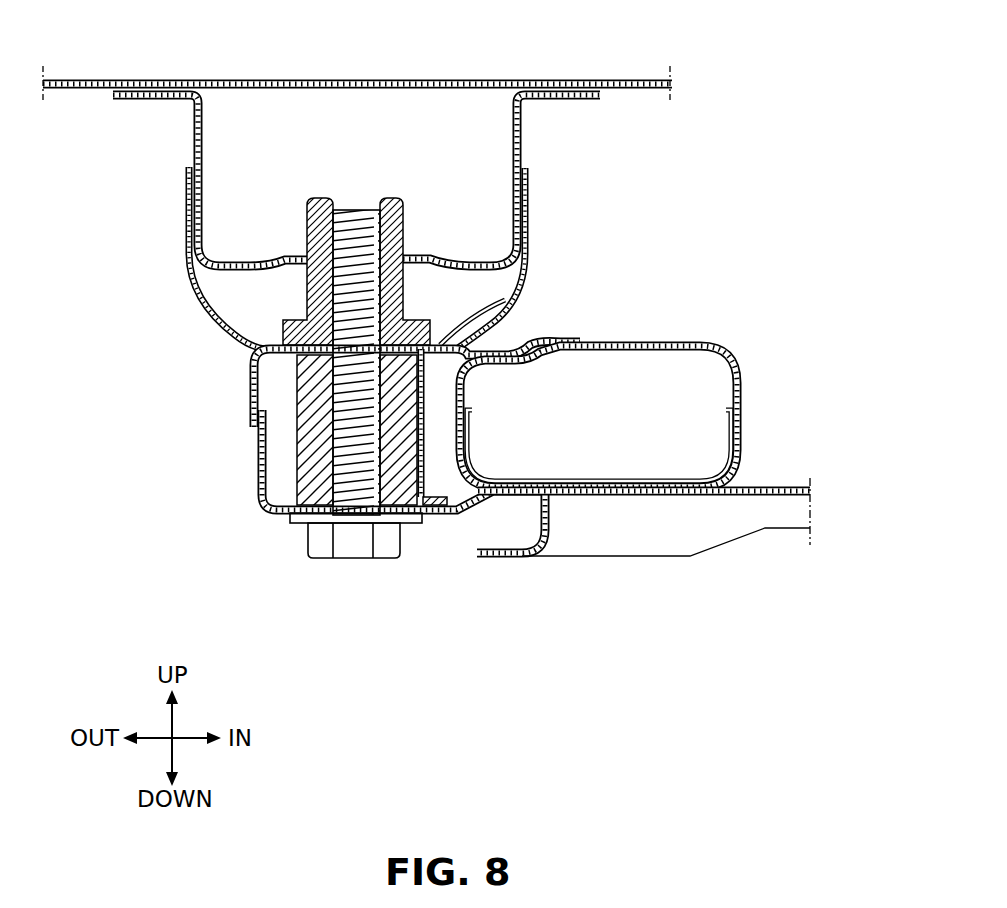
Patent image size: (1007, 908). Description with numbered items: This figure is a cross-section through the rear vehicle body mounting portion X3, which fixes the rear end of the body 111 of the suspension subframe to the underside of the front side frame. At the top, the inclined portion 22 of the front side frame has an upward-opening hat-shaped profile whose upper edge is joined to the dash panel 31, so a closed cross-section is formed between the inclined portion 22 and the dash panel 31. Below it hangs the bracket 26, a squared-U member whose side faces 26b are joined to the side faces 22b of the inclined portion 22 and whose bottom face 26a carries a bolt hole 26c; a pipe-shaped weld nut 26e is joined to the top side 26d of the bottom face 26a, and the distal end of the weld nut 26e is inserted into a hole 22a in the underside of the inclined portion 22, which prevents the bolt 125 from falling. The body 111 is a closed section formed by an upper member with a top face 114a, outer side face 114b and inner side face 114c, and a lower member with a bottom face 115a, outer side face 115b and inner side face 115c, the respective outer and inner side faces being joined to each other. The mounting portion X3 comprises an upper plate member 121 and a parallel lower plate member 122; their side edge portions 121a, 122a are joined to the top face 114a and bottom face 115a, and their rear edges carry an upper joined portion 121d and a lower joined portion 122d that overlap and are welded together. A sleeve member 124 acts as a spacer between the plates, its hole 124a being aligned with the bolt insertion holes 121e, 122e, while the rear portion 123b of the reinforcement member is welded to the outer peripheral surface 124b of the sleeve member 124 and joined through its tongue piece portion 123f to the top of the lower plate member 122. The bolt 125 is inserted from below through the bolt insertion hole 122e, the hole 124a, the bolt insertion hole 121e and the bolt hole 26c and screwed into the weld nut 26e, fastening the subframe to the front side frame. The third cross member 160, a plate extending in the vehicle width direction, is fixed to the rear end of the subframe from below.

The dash panel 31 is at (100, 80).
The inclined portion 22 is at (498, 128).
The hole 22a is at (395, 253).
The side face 22b is at (193, 118).
The bracket 26 is at (187, 255).
The bottom face 26a is at (257, 342).
The side face 26b is at (187, 190).
The bolt hole 26c is at (403, 302).
The top side 26d is at (520, 306).
The weld nut 26e is at (307, 207).
The body 111 is at (728, 326).
The top face 114a is at (636, 342).
The outer side face 114b is at (466, 396).
The inner side face 114c is at (738, 390).
The bottom face 115a is at (625, 462).
The outer side face 115b is at (472, 437).
The inner side face 115c is at (733, 440).
The upper plate member 121 is at (250, 384).
The side edge portion 121a is at (510, 343).
The upper joined portion 121d is at (250, 422).
The bolt insertion hole 121e is at (325, 367).
The lower plate member 122 is at (258, 495).
The side edge portion 122a is at (510, 558).
The lower joined portion 122d is at (262, 457).
The bolt insertion hole 122e is at (342, 475).
The rear portion 123b is at (468, 505).
The tongue piece portion 123f is at (440, 515).
The sleeve member 124 is at (290, 502).
The hole 124a is at (302, 508).
The outer peripheral surface 124b is at (296, 465).
The bolt 125 is at (386, 560).
The third cross member 160 is at (765, 486).
The rear vehicle body mounting portion X3 is at (176, 559).